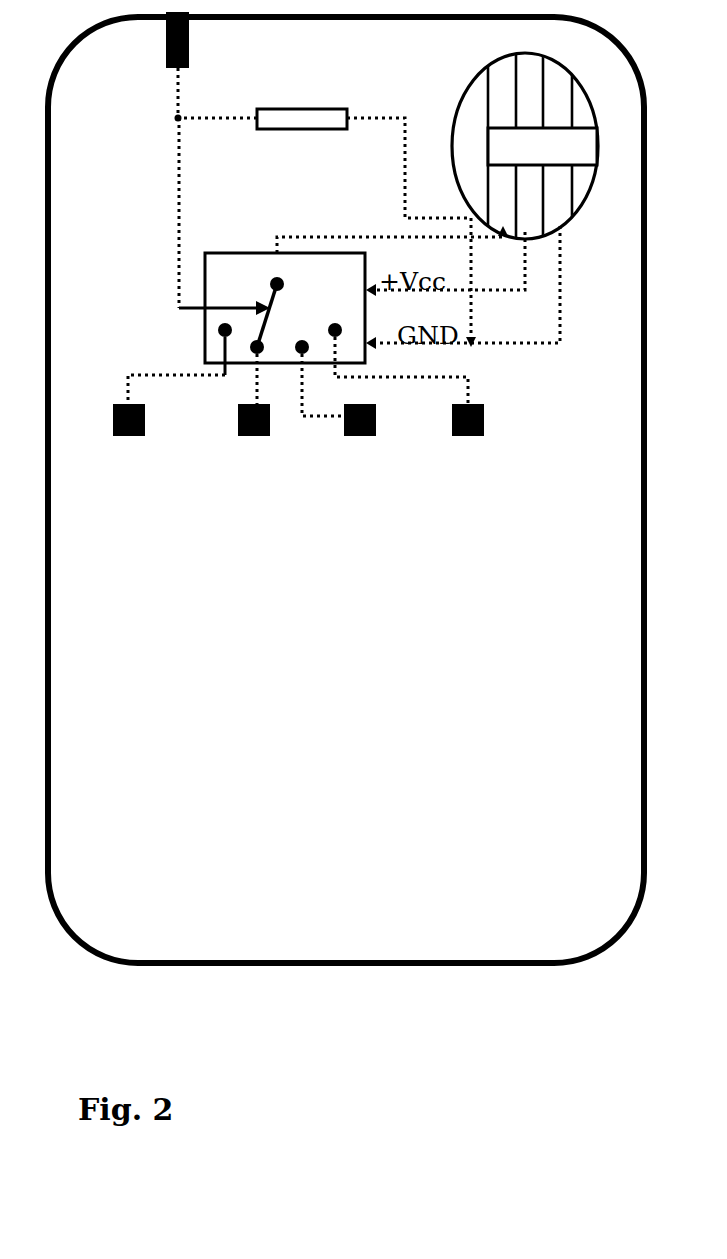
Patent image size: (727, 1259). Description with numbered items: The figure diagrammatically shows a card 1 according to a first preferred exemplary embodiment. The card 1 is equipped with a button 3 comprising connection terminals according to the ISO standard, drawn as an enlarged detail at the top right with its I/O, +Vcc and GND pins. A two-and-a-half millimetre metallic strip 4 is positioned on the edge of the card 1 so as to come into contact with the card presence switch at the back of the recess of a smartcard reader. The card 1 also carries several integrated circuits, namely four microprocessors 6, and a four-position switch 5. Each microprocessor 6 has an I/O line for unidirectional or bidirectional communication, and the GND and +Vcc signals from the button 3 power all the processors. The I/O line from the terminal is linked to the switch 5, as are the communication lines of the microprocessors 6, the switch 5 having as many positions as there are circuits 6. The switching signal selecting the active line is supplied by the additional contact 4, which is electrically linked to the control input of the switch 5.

The card 1 is at (364, 490).
The button 3 is at (539, 147).
The metallic strip 4 is at (191, 40).
The switch 5 is at (272, 284).
The microprocessors 6 is at (295, 444).